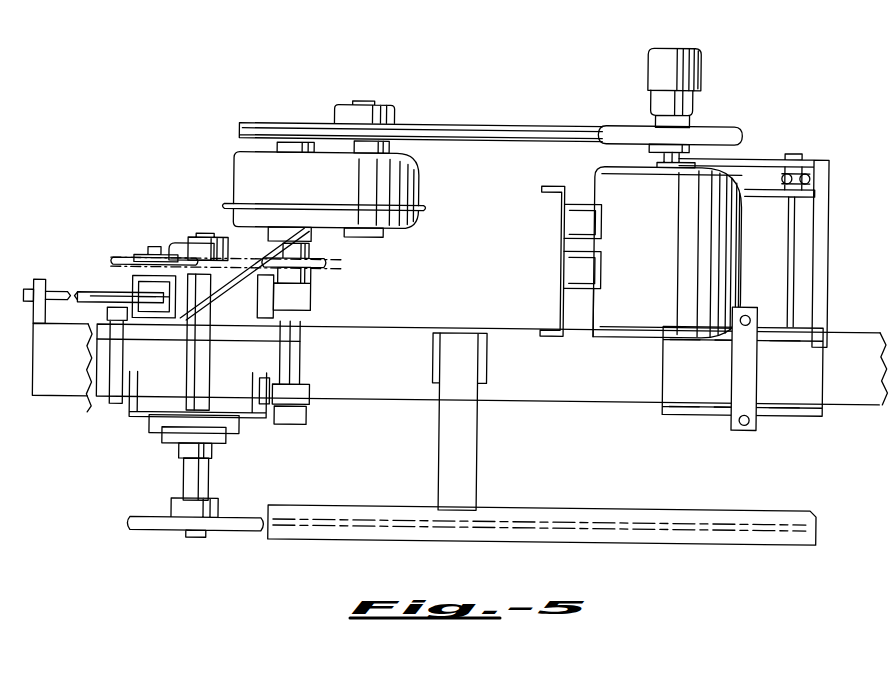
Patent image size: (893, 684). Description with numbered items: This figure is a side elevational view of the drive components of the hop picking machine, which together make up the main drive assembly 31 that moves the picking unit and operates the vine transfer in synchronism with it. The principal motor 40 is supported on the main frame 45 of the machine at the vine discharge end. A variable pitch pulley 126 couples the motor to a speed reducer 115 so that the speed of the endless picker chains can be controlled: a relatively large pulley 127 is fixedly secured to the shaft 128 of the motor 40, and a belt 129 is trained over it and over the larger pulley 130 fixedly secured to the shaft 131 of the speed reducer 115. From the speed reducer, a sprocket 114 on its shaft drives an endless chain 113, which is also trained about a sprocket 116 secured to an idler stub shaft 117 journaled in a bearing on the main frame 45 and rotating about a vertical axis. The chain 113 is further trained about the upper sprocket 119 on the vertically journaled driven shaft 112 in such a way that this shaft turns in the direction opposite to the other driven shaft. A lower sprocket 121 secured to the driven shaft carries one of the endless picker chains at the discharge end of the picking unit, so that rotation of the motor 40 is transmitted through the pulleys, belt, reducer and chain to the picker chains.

The main drive assembly 31 is at (308, 190).
The motor 40 is at (648, 236).
The main frame 45 is at (583, 392).
The driven shaft 112 is at (197, 473).
The chain 113 is at (115, 271).
The sprocket 114 is at (323, 263).
The speed reducer 115 is at (422, 187).
The sprocket 116 is at (113, 261).
The idler stub shaft 117 is at (152, 249).
The upper sprocket 119 is at (173, 247).
The lower sprocket 121 is at (167, 523).
The variable pitch pulley 126 is at (642, 64).
The pulley 127 is at (615, 125).
The shaft 128 is at (662, 155).
The belt 129 is at (533, 133).
The pulley 130 is at (463, 123).
The shaft 131 is at (393, 143).